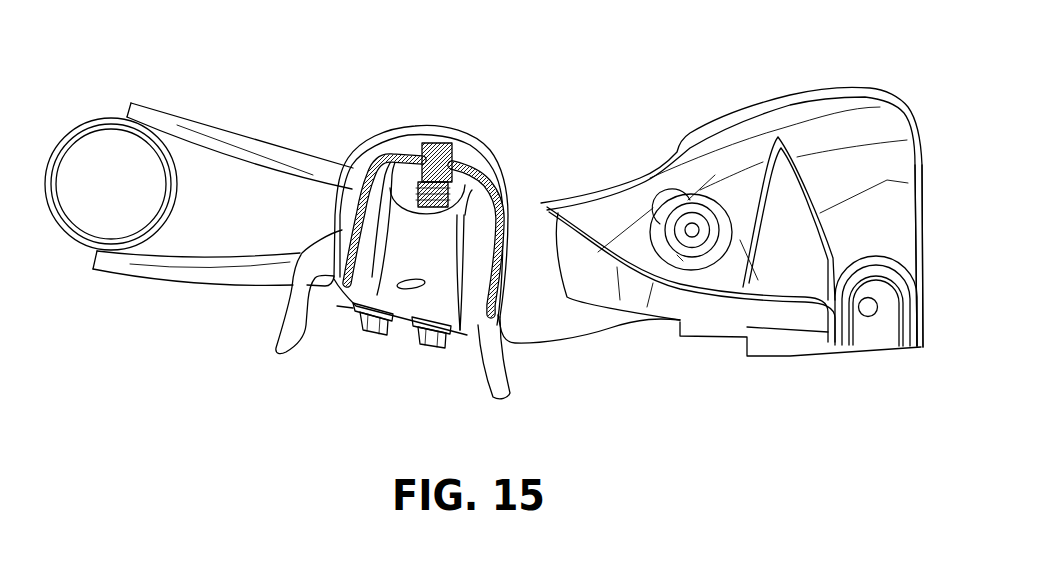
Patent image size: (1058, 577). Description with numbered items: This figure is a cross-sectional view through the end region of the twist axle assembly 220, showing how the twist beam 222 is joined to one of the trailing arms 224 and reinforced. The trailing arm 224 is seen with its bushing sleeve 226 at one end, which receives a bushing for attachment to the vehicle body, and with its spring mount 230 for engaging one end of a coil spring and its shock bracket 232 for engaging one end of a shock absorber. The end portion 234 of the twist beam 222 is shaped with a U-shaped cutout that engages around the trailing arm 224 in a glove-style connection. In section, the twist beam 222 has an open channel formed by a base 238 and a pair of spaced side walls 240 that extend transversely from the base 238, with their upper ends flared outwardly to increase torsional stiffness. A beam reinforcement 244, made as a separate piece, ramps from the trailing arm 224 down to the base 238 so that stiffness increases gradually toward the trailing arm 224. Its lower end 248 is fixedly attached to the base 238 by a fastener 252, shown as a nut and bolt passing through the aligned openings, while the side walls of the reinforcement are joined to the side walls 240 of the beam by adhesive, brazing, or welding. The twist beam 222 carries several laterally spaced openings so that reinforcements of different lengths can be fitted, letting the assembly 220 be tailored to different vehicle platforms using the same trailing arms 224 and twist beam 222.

The twist axle assembly 220 is at (826, 75).
The twist beam 222 is at (487, 141).
The trailing arm 224 is at (928, 140).
The bushing sleeve 226 is at (59, 145).
The spring mount 230 is at (783, 315).
The shock bracket 232 is at (881, 310).
The end portion 234 is at (407, 135).
The base 238 is at (403, 152).
The side wall 240 is at (290, 285).
The beam reinforcement 244 is at (370, 330).
The lower end 248 is at (374, 160).
The fastener 252 is at (428, 145).